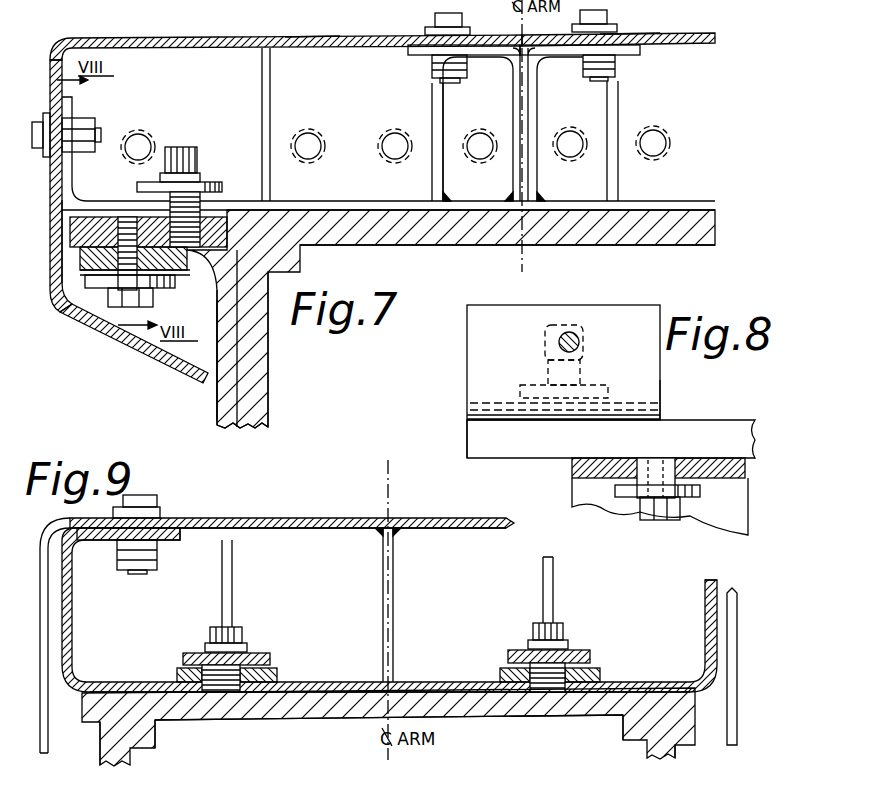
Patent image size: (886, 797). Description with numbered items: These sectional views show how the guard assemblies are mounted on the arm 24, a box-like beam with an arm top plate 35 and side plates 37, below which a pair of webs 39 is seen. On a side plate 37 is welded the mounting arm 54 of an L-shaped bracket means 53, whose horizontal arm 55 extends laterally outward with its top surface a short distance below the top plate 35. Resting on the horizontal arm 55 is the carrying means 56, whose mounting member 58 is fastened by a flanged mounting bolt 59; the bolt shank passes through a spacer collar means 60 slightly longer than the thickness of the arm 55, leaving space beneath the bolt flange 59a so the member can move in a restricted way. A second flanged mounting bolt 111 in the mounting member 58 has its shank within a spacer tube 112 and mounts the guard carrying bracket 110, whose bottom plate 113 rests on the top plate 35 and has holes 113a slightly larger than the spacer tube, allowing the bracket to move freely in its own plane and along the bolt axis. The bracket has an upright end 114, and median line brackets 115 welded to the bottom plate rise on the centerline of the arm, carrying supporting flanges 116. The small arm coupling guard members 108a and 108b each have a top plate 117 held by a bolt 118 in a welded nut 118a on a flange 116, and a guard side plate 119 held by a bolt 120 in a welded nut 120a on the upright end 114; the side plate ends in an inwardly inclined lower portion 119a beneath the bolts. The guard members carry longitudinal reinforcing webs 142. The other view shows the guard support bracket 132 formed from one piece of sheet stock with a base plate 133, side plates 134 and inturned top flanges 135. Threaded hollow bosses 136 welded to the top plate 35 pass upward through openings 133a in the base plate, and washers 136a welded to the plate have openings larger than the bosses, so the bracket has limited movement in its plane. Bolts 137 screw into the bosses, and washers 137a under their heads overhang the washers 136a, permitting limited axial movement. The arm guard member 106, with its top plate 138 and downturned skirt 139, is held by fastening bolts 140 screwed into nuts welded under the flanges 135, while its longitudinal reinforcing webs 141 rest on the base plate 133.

In FIG. 7, the arm 24 is at (734, 216).
In FIG. 9, the arm 24 is at (537, 719).
In FIG. 7, the arm top plate 35 is at (660, 250).
In FIG. 9, the arm top plate 35 is at (335, 717).
In FIG. 7, the arm side plate 37 is at (272, 352).
In FIG. 9, the arm side plate 37 is at (132, 756).
In FIG. 9, the webs 39 is at (50, 727).
In FIG. 7, the L-shaped bracket means 53 is at (214, 406).
In FIG. 7, the mounting arm 54 is at (226, 416).
In FIG. 8, the mounting arm 54 is at (583, 511).
In FIG. 7, the horizontal arm 55 is at (186, 270).
In FIG. 8, the horizontal arm 55 is at (572, 469).
In FIG. 7, the carrying means 56 is at (100, 298).
In FIG. 7, the mounting member 58 is at (52, 231).
In FIG. 8, the mounting member 58 is at (467, 441).
In FIG. 7, the flanged mounting bolt 59 is at (98, 296).
In FIG. 8, the flanged mounting bolt 59 is at (687, 508).
In FIG. 7, the bolt flange 59a is at (83, 297).
In FIG. 7, the spacer collar means 60 is at (66, 262).
In FIG. 8, the spacer collar means 60 is at (650, 462).
In FIG. 9, the arm guard member 106 is at (317, 513).
In FIG. 7, the small arm coupling guard member 108a is at (218, 24).
In FIG. 7, the small arm coupling guard member 108b is at (717, 37).
In FIG. 7, the guard carrying bracket 110 is at (676, 194).
In FIG. 8, the guard carrying bracket 110 is at (672, 397).
In FIG. 7, the flanged mounting bolt 111 is at (202, 148).
In FIG. 8, the flanged mounting bolt 111 is at (547, 370).
In FIG. 7, the spacer tube 112 is at (205, 193).
In FIG. 7, the bottom plate 113 is at (328, 200).
In FIG. 7, the holes 113a is at (143, 197).
In FIG. 7, the upright end 114 is at (77, 100).
In FIG. 8, the upright end 114 is at (480, 305).
In FIG. 7, the median line bracket 115 is at (510, 104).
In FIG. 7, the supporting flange 116 is at (408, 50).
In FIG. 7, the top plate 117 is at (294, 36).
In FIG. 7, the bolt 118 is at (434, 20).
In FIG. 7, the welded nut 118a is at (437, 70).
In FIG. 7, the guard side plate 119 is at (56, 98).
In FIG. 7, the inwardly inclined lower portion 119a is at (170, 371).
In FIG. 7, the bolt 120 is at (99, 133).
In FIG. 8, the bolt 120 is at (576, 346).
In FIG. 7, the welded nut 120a is at (86, 109).
In FIG. 9, the guard support bracket 132 is at (700, 580).
In FIG. 9, the base plate 133 is at (432, 680).
In FIG. 9, the openings 133a is at (258, 713).
In FIG. 9, the side plates 134 is at (72, 617).
In FIG. 9, the inturned top flange 135 is at (185, 534).
In FIG. 9, the threaded hollow boss 136 is at (212, 693).
In FIG. 9, the washer 136a is at (277, 676).
In FIG. 9, the bolt 137 is at (235, 627).
In FIG. 9, the washer 137a is at (183, 660).
In FIG. 9, the top plate 138 is at (248, 518).
In FIG. 9, the downturned skirt 139 is at (740, 691).
In FIG. 9, the fastening bolt 140 is at (152, 495).
In FIG. 9, the longitudinal reinforcing web 141 is at (236, 572).
In FIG. 7, the longitudinal reinforcing web 142 is at (270, 109).